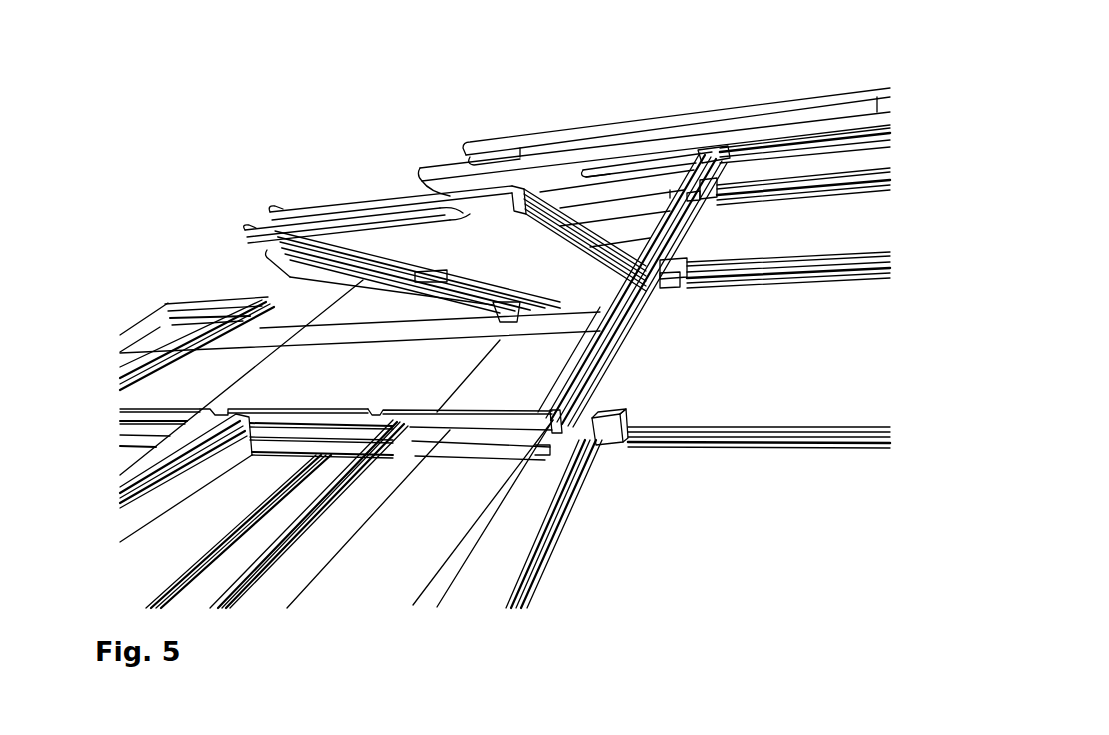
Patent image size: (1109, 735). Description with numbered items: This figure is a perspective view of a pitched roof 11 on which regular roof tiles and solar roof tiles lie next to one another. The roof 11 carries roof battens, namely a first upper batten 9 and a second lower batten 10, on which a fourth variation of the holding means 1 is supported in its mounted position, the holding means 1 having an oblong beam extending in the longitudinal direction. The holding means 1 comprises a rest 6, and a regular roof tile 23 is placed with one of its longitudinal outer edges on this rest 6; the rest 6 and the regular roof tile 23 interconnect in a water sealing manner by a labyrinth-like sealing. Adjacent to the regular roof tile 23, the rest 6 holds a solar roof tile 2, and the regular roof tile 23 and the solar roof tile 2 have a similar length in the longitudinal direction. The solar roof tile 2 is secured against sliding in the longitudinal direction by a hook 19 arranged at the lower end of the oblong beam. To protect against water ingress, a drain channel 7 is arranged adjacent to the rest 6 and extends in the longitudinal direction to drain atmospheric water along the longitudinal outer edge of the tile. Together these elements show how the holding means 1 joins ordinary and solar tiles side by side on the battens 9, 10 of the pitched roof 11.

The holding means 1 is at (664, 247).
The solar roof tile 2 is at (810, 187).
The rest 6 is at (537, 442).
The drain channel 7 is at (545, 440).
The first upper batten 9 is at (267, 290).
The second lower batten 10 is at (313, 370).
The pitched roof 11 is at (162, 157).
The hook 19 is at (607, 455).
The regular roof tile 23 is at (330, 245).